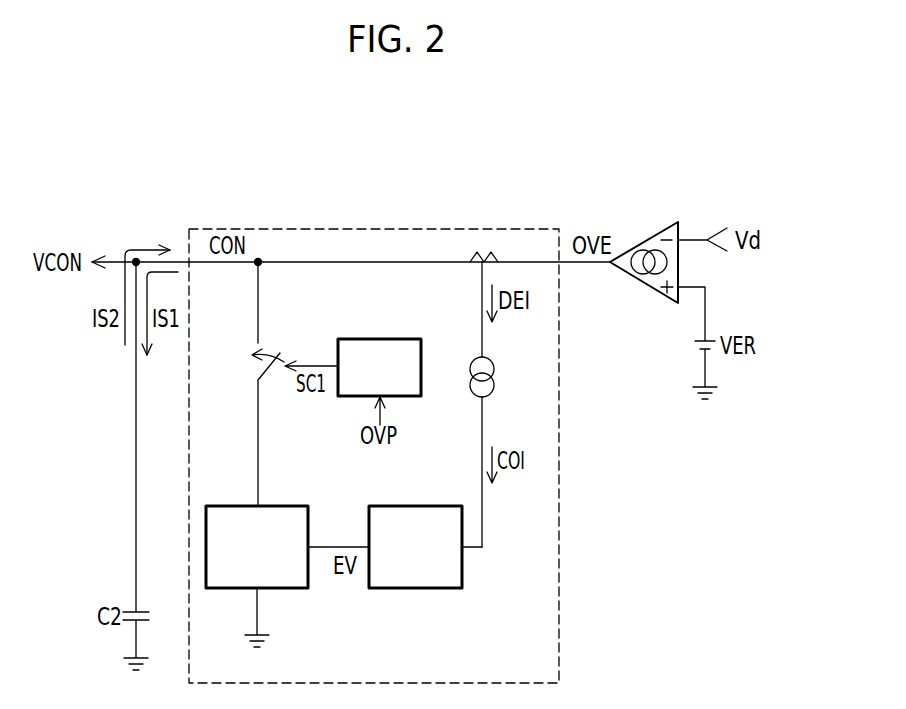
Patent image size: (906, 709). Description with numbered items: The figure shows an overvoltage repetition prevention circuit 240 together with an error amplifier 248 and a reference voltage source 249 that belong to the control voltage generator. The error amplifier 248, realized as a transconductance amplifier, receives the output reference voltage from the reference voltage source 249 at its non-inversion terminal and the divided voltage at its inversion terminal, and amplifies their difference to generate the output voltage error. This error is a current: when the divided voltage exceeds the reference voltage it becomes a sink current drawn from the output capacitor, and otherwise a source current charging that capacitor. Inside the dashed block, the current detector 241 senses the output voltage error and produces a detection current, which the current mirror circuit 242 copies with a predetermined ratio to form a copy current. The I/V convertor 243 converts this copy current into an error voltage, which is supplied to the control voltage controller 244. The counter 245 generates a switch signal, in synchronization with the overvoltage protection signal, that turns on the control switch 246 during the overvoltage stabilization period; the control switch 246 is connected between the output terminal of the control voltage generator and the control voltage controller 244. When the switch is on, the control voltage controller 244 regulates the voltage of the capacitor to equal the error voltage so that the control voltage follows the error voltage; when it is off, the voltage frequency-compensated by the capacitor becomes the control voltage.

The overvoltage repetition prevention circuit 240 is at (560, 595).
The current detector 241 is at (476, 268).
The current mirror circuit 242 is at (496, 380).
The I/V convertor 243 is at (412, 592).
The control voltage controller 244 is at (300, 490).
The counter 245 is at (383, 338).
The control switch 246 is at (270, 350).
The error amplifier 248 is at (655, 236).
The reference voltage source 249 is at (693, 345).